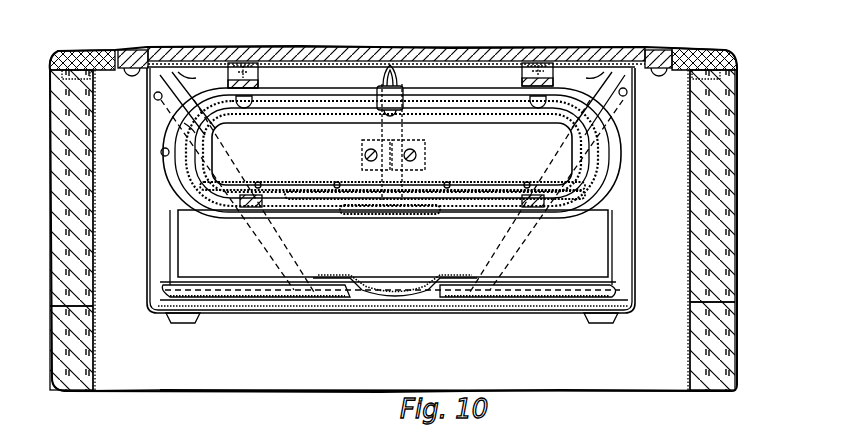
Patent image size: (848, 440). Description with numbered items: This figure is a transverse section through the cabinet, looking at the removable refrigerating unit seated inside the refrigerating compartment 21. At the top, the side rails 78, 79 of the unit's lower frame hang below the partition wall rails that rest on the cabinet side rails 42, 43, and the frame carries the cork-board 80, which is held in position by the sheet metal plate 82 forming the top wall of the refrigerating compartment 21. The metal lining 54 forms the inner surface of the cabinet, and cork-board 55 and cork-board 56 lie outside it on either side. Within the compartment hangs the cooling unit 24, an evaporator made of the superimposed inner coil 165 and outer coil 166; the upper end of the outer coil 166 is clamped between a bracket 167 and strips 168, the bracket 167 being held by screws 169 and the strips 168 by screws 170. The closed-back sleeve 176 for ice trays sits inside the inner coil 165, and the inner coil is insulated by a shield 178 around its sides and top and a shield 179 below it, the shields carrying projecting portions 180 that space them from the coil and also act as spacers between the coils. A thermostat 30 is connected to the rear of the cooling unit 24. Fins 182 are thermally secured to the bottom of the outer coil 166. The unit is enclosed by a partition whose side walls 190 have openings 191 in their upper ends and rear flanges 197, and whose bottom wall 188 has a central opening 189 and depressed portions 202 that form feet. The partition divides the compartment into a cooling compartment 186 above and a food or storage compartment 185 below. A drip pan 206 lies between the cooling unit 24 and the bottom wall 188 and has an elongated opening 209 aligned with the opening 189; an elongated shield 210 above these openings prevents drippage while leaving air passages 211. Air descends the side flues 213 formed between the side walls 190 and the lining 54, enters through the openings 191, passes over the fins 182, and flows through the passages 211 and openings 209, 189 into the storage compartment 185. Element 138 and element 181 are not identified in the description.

The refrigerating compartment 21 is at (147, 352).
The cooling unit 24 is at (392, 154).
The thermostat 30 is at (404, 126).
The side rail 42 is at (86, 50).
The side rail 43 is at (712, 52).
The metal lining 54 is at (96, 374).
The cork-board 55 is at (60, 252).
The cork-board 56 is at (735, 212).
The side rail 78 is at (133, 50).
The side rail 79 is at (645, 50).
The cork-board 80 is at (482, 52).
The sheet metal plate 82 is at (360, 64).
The pivot pin 138 is at (160, 152).
The inner coil 165 is at (588, 168).
The outer coil 166 is at (606, 150).
The bracket 167 is at (258, 76).
The strip 168 is at (524, 94).
The screw 169 is at (228, 72).
The screw 170 is at (553, 75).
The closed-back sleeve 176 is at (215, 143).
The shield 178 is at (184, 123).
The shield 179 is at (290, 202).
The projecting portion 180 is at (247, 105).
The guide block 181 is at (250, 208).
The fin 182 is at (598, 262).
The food or storage compartment 185 is at (312, 385).
The cooling compartment 186 is at (172, 204).
The bottom wall 188 is at (222, 312).
The central opening 189 is at (314, 342).
The side wall 190 is at (148, 262).
The opening 191 is at (150, 190).
The rear flange 197 is at (160, 272).
The depressed portion 202 is at (604, 320).
The drip pan 206 is at (548, 300).
The elongated opening 209 is at (354, 300).
The elongated shield 210 is at (372, 270).
The air passage 211 is at (322, 284).
The side flue 213 is at (105, 272).